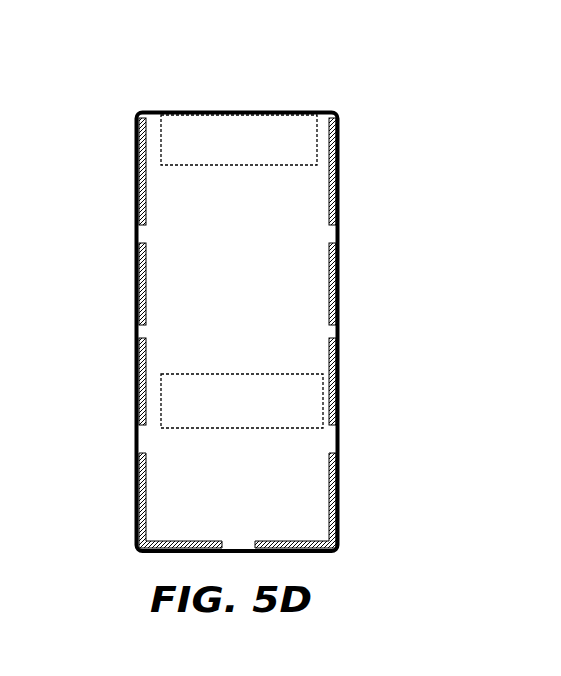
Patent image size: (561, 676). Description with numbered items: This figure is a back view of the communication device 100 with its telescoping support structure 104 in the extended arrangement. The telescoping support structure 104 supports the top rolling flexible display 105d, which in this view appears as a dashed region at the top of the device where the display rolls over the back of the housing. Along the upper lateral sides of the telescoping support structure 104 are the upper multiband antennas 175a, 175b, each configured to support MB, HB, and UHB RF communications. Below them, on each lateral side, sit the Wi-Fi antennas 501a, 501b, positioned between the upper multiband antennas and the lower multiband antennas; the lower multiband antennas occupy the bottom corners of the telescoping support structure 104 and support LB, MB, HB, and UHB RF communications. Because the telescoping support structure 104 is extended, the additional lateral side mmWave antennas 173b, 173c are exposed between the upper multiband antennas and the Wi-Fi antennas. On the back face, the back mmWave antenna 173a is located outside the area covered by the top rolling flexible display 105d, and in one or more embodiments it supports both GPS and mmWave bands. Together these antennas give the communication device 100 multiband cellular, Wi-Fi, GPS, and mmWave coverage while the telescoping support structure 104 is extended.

The communication device 100 is at (90, 108).
The telescoping support structure 104 is at (341, 331).
The top rolling flexible display 105d is at (216, 152).
The upper right multiband antenna 175b is at (130, 548).
The upper left multiband antenna 175a is at (350, 548).
The lateral side mmWave antenna 173c is at (130, 325).
The lateral side mmWave antenna 173b is at (350, 325).
The back mmWave antenna 173a is at (220, 422).
The right Wi-Fi antenna 501b is at (130, 338).
The left Wi-Fi antenna 501a is at (350, 338).